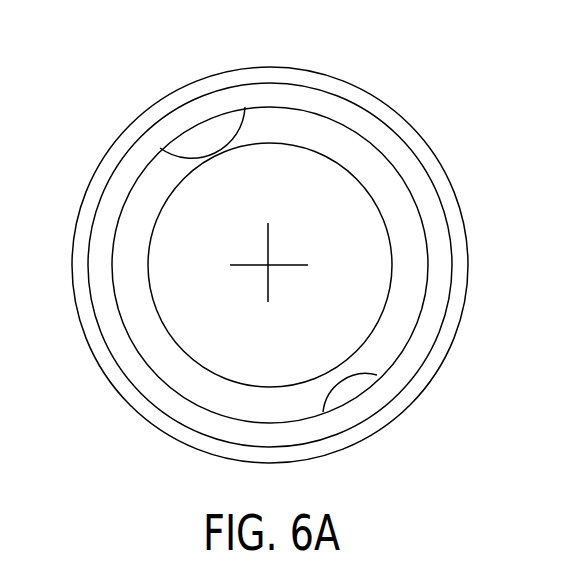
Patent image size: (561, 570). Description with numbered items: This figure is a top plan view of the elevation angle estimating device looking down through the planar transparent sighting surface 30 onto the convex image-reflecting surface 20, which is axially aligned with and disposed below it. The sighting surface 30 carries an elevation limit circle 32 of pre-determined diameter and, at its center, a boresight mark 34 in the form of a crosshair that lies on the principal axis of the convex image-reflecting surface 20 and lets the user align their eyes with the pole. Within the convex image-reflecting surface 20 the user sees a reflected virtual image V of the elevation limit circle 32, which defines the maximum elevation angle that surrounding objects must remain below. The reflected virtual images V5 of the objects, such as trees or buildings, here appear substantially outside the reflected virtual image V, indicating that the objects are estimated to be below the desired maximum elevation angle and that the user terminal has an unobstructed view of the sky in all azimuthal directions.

The convex image-reflecting surface 20 is at (108, 285).
The planar transparent sighting surface 30 is at (410, 125).
The elevation limit circle 32 is at (448, 207).
The boresight mark 34 is at (252, 264).
The reflected virtual image of the elevation limit circle V is at (393, 290).
The reflected virtual image of object V5 is at (245, 112).